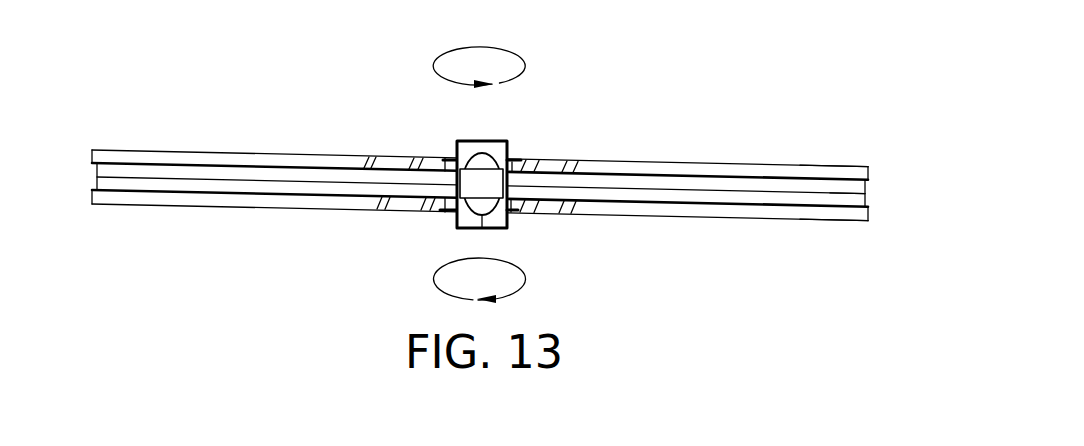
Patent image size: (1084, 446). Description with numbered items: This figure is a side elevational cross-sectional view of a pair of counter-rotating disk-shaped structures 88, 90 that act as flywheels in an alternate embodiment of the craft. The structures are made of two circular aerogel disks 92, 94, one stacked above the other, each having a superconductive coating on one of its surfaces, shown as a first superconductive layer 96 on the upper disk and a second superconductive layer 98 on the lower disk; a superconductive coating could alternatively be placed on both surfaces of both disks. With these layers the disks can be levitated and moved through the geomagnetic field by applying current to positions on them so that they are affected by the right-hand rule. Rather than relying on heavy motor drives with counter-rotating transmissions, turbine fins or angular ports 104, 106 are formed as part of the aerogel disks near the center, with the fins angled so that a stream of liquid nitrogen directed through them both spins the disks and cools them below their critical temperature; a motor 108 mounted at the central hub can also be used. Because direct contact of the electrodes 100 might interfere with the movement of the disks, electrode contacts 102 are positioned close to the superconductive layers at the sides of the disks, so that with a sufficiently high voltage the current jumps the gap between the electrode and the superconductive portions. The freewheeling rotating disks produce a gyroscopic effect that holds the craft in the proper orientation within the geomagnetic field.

The upper assembly 88 is at (771, 127).
The lower assembly 90 is at (782, 231).
The circular aerogel disk 92 is at (629, 168).
The circular aerogel disk 94 is at (630, 210).
The first superconductive layer 96 is at (822, 170).
The second superconductive layer 98 is at (835, 210).
The electrodes 100 is at (692, 190).
The electrode contacts 102 is at (867, 194).
The turbine fins or angular ports 104 is at (381, 157).
The turbine fins or angular ports 106 is at (375, 206).
The motor 108 is at (483, 184).